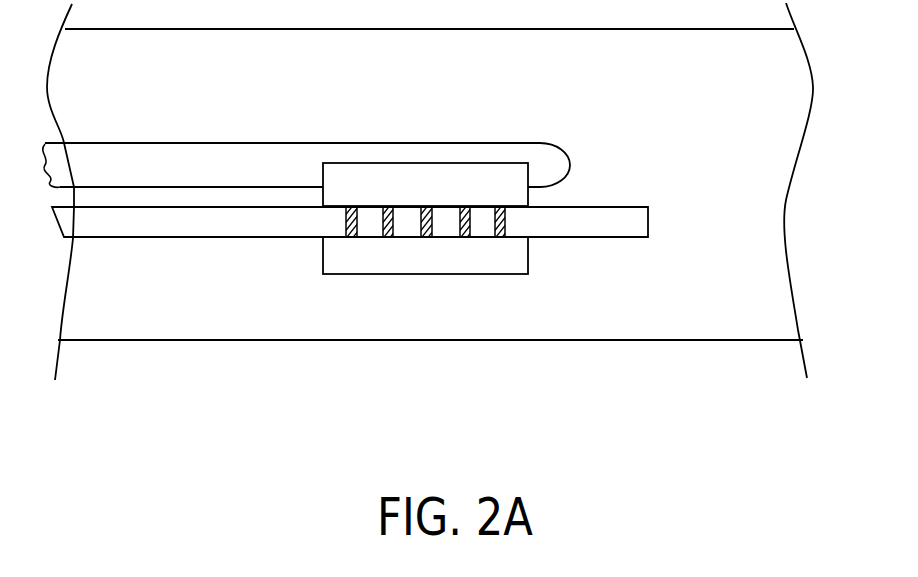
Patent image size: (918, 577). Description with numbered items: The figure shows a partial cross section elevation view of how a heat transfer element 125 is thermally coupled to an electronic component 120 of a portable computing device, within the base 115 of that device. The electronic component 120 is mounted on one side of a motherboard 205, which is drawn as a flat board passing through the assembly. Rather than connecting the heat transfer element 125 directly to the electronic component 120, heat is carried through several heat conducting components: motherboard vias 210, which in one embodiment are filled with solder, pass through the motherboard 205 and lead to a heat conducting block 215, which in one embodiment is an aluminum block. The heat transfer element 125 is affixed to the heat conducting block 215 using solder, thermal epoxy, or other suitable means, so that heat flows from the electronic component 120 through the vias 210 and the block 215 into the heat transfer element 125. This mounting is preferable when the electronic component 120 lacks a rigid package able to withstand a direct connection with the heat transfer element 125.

The base 115 is at (377, 355).
The electronic component 120 is at (525, 279).
The heat transfer element 125 is at (306, 165).
The motherboard 205 is at (657, 223).
The motherboard vias 210 is at (510, 222).
The heat conducting block 215 is at (425, 184).